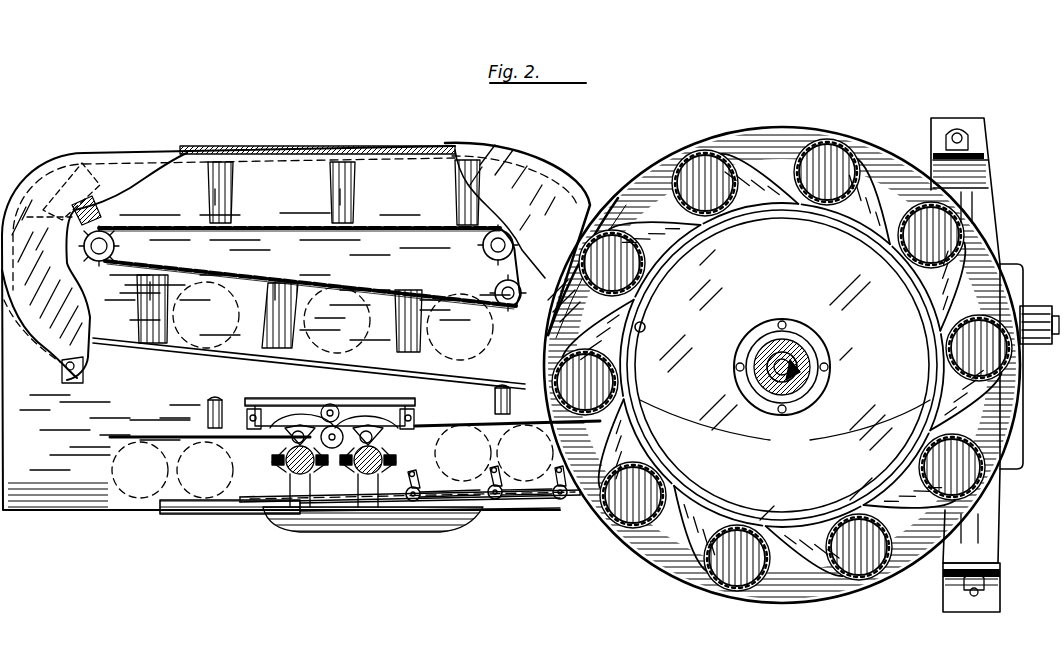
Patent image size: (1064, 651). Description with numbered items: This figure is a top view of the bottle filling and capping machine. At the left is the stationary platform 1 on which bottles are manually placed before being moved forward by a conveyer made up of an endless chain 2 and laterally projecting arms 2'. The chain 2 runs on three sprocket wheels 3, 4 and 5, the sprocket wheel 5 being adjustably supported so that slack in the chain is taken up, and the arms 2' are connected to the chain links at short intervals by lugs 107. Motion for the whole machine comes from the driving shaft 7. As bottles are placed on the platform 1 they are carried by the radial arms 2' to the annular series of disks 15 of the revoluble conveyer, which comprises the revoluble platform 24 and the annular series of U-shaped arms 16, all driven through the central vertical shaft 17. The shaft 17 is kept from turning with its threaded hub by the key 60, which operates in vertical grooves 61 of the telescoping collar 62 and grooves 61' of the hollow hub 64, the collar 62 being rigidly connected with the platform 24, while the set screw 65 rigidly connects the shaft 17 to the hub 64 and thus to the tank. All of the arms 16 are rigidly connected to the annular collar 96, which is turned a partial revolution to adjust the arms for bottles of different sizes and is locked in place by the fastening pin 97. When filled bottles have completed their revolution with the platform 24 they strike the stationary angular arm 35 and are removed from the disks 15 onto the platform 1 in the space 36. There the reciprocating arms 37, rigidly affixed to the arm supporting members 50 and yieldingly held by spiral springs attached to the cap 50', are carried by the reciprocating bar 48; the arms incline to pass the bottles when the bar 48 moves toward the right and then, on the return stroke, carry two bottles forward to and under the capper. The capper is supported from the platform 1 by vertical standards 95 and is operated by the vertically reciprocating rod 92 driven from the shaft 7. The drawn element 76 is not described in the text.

The stationary platform 1 is at (87, 470).
The endless chain 2 is at (444, 192).
The laterally projecting arms 2' is at (279, 266).
The sprocket wheel 3 is at (482, 240).
The sprocket wheel 4 is at (494, 292).
The sprocket wheel 5 is at (115, 248).
The driving shaft 7 is at (1050, 345).
The bottle supporting disks 15 is at (640, 265).
The U-shaped arms 16 is at (760, 195).
The vertical shaft 17 is at (796, 345).
The revoluble platform 24 is at (663, 520).
The stationary angular arm 35 is at (332, 461).
The space 36 is at (545, 497).
The reciprocating arms 37 is at (425, 503).
The reciprocating bar 48 is at (190, 515).
The arm supporting members 50 is at (482, 523).
The cap 50' is at (465, 517).
The key 60 is at (755, 372).
The vertical grooves 61 is at (750, 358).
The grooves 61' is at (753, 343).
The telescoping collar 62 is at (778, 407).
The hollow hub 64 is at (808, 388).
The set screw 65 is at (805, 372).
The guide blocks 76 is at (208, 408).
The vertically reciprocating rod 92 is at (337, 408).
The vertical standards 95 is at (395, 420).
The annular collar 96 is at (775, 510).
The fastening pin 97 is at (646, 327).
The lugs 107 is at (208, 200).